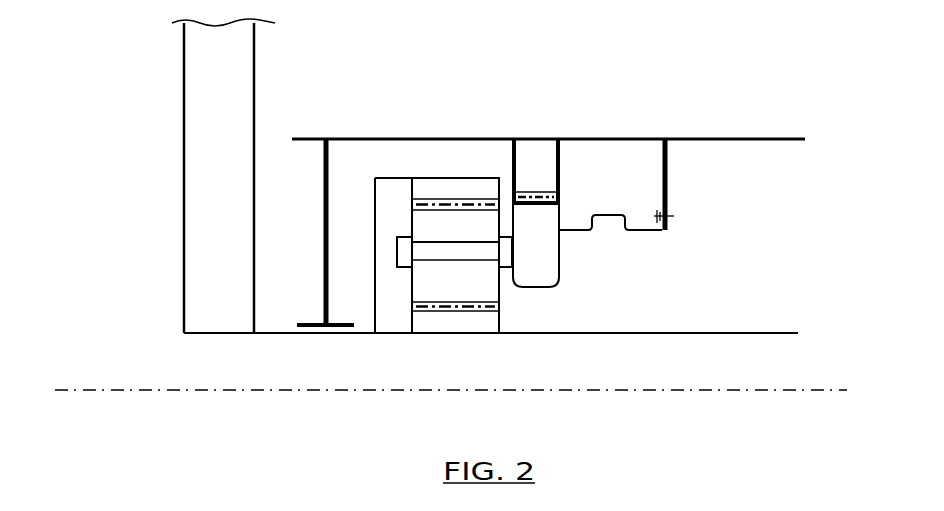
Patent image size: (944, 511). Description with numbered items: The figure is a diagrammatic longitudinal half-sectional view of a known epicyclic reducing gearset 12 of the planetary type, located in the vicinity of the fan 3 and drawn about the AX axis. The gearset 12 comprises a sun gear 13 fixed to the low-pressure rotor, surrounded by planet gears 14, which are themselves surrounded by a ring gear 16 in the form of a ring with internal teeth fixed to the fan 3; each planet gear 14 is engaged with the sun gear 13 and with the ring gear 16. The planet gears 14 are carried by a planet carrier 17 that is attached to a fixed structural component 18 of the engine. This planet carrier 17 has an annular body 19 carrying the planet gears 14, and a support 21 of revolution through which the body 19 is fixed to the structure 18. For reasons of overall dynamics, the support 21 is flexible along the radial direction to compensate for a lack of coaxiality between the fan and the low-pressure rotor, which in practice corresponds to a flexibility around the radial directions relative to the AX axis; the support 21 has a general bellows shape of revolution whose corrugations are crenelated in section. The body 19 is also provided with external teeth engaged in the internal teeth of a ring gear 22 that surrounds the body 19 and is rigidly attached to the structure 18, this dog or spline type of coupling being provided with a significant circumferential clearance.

The fan 3 is at (241, 179).
The reducing gearset 12 is at (455, 152).
The sun gear 13 is at (452, 325).
The planet gears 14 is at (430, 225).
The ring gear 16 is at (430, 190).
The planet carrier 17 is at (624, 278).
The fixed structural component 18 is at (626, 139).
The annular body 19 is at (537, 277).
The support 21 is at (615, 229).
The ring gear 22 is at (528, 153).
The axis AX is at (97, 393).